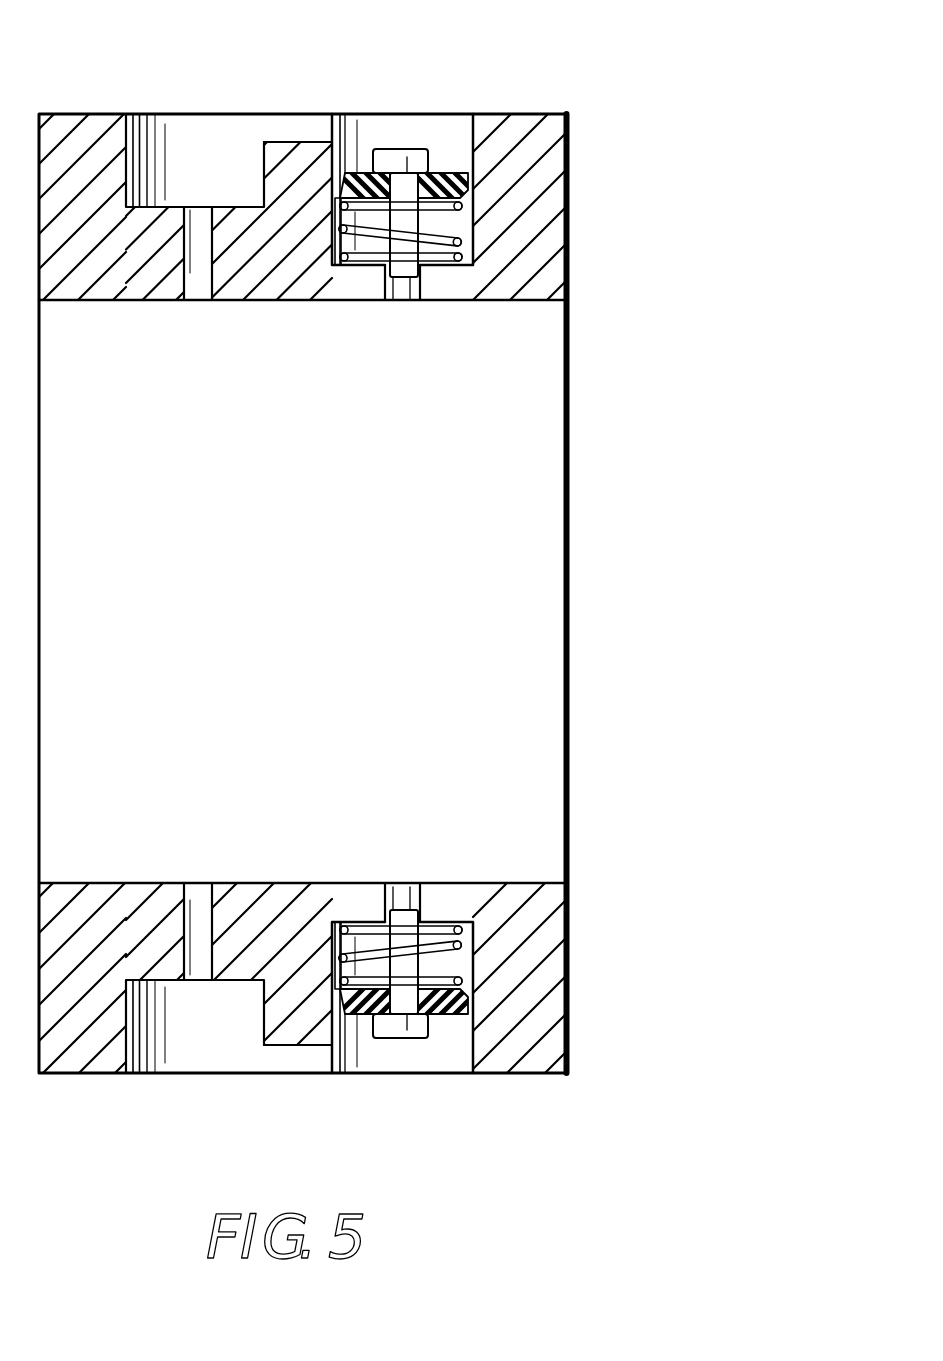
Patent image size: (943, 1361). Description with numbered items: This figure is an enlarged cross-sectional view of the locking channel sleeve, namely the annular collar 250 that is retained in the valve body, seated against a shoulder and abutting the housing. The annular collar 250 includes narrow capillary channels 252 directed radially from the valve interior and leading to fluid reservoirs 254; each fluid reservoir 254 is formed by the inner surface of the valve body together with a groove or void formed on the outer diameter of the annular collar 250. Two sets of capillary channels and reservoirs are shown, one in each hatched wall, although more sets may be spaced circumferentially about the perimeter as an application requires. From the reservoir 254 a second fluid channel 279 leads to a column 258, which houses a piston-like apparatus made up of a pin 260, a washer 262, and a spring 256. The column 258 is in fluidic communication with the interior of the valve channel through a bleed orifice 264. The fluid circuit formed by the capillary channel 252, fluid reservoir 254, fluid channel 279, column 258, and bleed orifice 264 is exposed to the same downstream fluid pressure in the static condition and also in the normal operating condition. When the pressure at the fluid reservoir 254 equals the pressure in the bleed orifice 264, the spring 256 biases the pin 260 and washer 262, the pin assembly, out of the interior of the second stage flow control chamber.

The annular collar 250 is at (568, 214).
The capillary channel 252 is at (200, 290).
The fluid reservoir 254 is at (207, 140).
The spring 256 is at (372, 235).
The column 258 is at (453, 140).
The pin 260 is at (400, 150).
The washer 262 is at (366, 175).
The bleed orifice 264 is at (410, 302).
The second fluid channel 279 is at (295, 128).